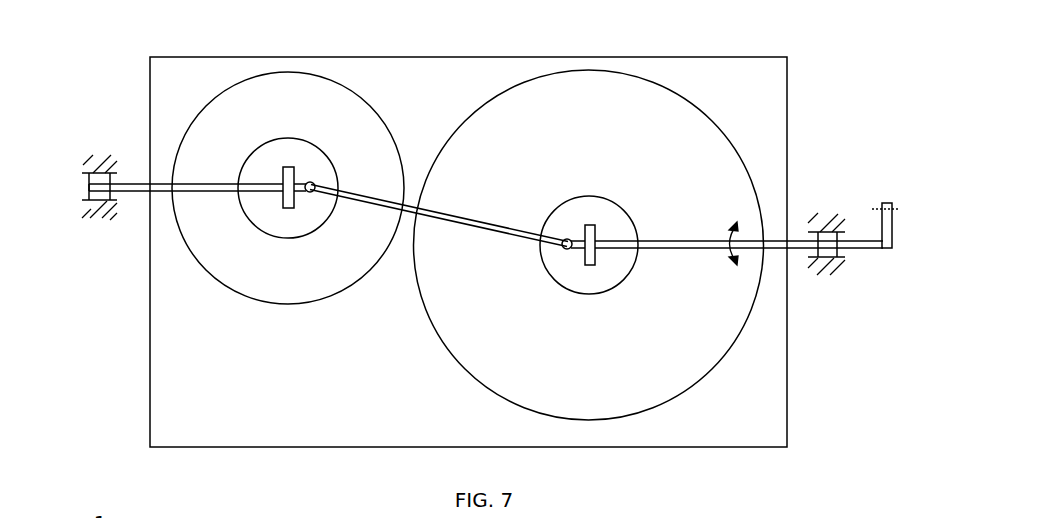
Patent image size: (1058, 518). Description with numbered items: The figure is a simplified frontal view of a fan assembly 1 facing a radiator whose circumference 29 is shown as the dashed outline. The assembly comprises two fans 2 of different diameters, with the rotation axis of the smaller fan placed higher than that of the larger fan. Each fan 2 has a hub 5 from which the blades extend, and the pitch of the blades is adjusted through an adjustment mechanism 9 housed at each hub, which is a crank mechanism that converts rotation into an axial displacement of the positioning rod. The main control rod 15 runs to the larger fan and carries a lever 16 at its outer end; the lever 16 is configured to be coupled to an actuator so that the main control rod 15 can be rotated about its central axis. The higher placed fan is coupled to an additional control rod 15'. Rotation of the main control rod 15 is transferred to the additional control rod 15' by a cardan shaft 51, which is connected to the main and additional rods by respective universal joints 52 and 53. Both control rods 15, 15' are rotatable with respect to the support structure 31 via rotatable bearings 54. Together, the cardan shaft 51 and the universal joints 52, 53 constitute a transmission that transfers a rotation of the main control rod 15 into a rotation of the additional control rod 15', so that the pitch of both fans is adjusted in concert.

The drive arrangement 1 is at (128, 88).
The fan 2 is at (302, 93).
The hub 5 is at (267, 159).
The adjustment mechanism 9 is at (286, 203).
The additional control rod 15' is at (197, 102).
The main control rod 15 is at (727, 174).
The lever 16 is at (887, 235).
The radiator circumference 29 is at (738, 57).
The support structure 31 is at (97, 163).
The cardan shaft 51 is at (410, 207).
The universal joint 52 is at (565, 249).
The universal joint 53 is at (312, 193).
The rotatable bearing 54 is at (98, 180).